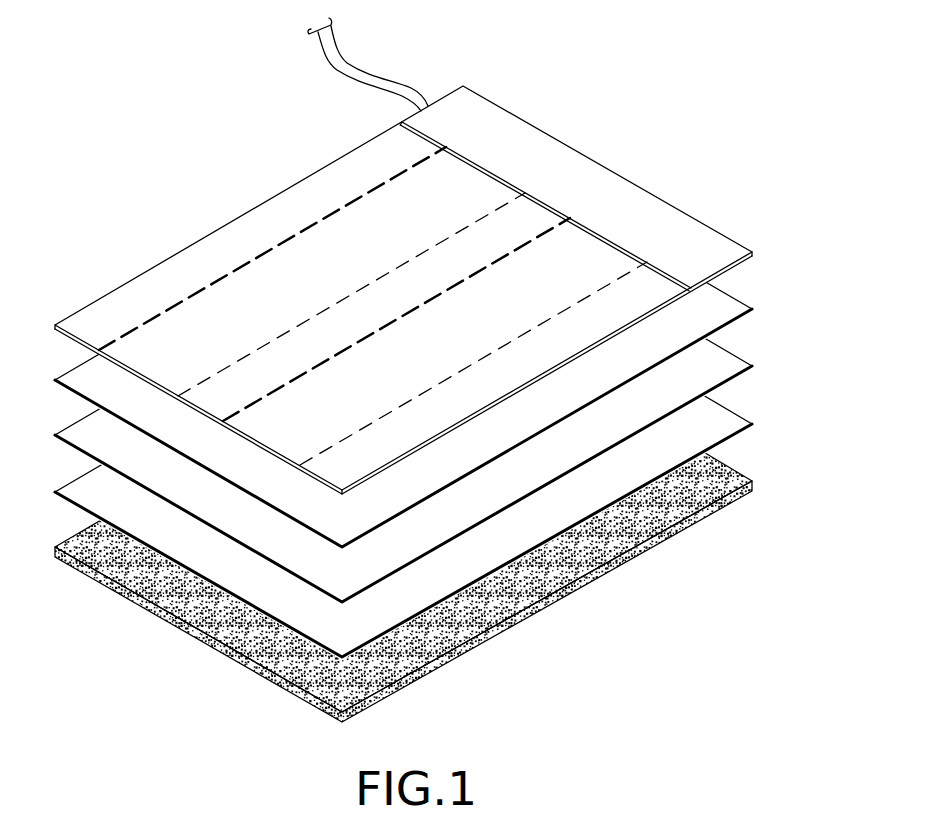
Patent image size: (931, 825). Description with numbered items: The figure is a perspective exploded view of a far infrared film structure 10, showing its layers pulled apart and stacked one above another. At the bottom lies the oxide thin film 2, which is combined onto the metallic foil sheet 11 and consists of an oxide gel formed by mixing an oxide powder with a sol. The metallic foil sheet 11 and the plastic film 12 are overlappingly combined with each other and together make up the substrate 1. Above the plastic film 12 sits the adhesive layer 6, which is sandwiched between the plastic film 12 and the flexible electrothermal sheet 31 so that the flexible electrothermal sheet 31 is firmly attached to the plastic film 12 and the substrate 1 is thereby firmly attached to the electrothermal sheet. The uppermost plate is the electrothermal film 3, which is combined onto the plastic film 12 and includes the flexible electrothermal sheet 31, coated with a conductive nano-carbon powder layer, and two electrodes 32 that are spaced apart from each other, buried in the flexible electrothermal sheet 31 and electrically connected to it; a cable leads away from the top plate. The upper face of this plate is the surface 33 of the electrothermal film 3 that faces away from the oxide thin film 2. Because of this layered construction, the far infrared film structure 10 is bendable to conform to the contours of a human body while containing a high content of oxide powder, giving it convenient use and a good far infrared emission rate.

The far infrared film structure 10 is at (112, 86).
The substrate 1 is at (456, 428).
The metallic foil sheet 11 is at (725, 420).
The plastic film 12 is at (820, 414).
The oxide thin film 2 is at (560, 560).
The electrothermal film 3 is at (627, 73).
The flexible electrothermal sheet 31 is at (578, 258).
The electrodes 32 is at (490, 227).
The surface of the electrothermal film 33 is at (302, 272).
The adhesive layer 6 is at (725, 308).